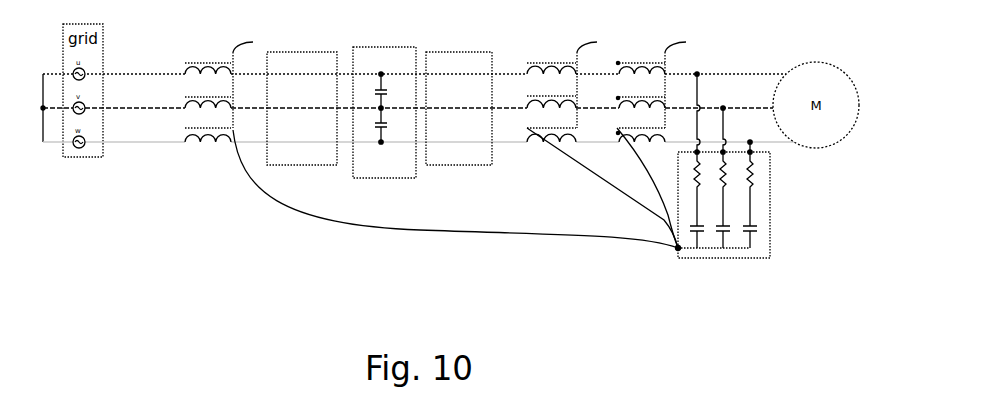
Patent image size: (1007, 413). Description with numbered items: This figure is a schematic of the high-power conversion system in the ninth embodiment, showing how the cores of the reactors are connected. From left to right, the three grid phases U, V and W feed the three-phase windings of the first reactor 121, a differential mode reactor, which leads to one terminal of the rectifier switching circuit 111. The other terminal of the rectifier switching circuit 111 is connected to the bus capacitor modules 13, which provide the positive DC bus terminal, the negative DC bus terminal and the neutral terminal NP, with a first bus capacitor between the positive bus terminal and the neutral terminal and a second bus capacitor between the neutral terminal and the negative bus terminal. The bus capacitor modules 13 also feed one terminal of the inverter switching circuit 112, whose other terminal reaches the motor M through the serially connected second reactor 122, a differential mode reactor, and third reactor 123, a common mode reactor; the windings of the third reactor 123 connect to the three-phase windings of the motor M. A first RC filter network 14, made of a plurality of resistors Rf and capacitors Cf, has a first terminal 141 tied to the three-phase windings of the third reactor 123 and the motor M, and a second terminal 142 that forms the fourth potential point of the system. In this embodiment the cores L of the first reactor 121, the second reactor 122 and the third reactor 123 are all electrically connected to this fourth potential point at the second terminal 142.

The first reactor 121 is at (192, 63).
The rectifier switching circuit 111 is at (297, 62).
The bus capacitor modules 13 is at (377, 47).
The inverter switching circuit 112 is at (440, 62).
The second reactor 122 is at (530, 63).
The third reactor 123 is at (620, 63).
The first terminal 141 is at (697, 152).
The second terminal 142 is at (678, 250).
The first RC filter network 14 is at (757, 258).